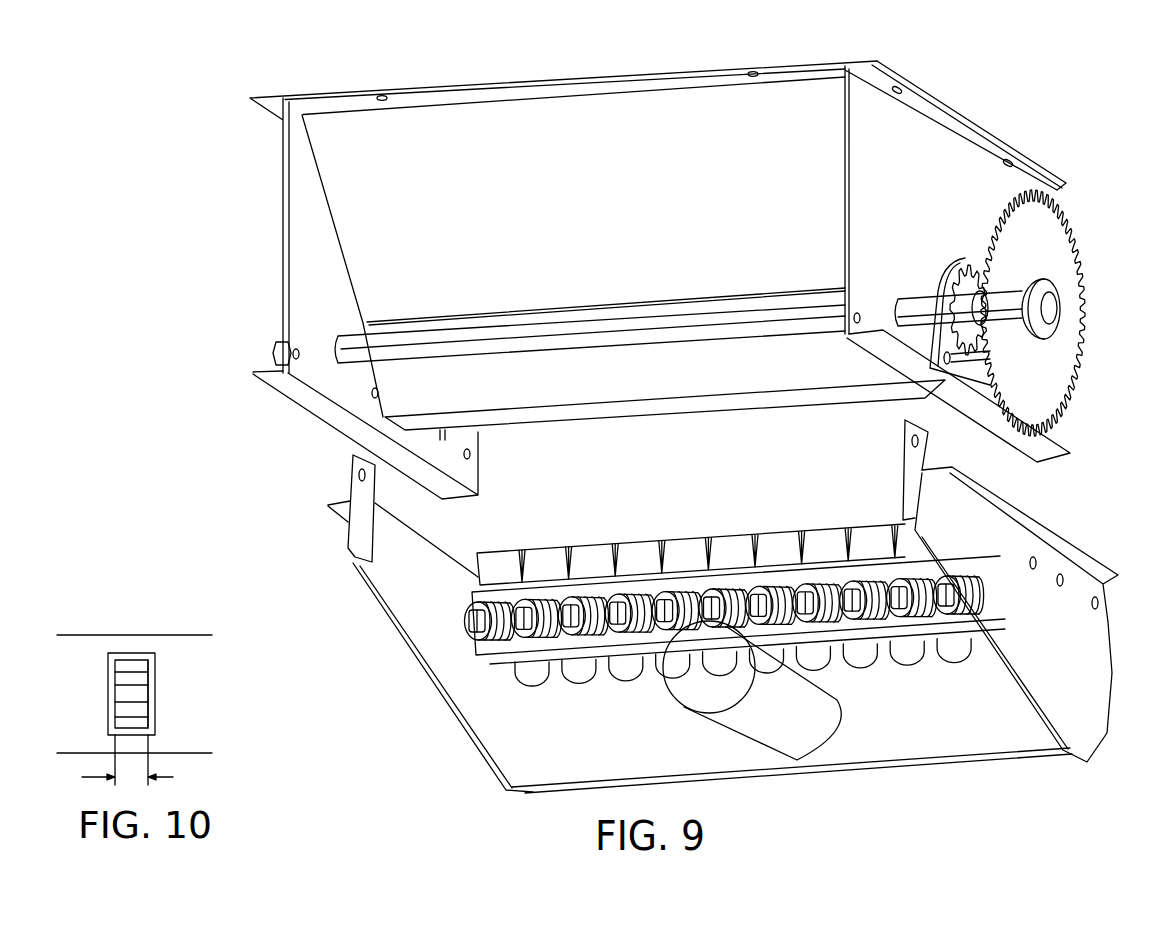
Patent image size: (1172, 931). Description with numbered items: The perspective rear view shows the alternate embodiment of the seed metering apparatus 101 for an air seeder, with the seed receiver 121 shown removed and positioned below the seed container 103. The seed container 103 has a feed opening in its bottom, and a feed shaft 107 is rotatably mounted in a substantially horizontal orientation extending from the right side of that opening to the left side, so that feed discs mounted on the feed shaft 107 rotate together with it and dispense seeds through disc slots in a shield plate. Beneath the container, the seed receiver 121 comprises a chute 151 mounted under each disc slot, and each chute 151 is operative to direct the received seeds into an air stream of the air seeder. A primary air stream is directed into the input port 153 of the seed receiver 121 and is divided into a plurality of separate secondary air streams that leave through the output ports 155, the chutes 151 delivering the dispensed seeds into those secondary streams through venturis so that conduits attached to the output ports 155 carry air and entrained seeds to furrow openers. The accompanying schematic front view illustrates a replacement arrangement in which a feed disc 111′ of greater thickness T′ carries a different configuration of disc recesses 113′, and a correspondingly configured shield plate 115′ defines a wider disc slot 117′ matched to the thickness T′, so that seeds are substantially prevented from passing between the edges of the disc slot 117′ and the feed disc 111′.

In FIG. 9, the seed metering apparatus 101 is at (257, 220).
In FIG. 9, the seed container 103 is at (950, 103).
In FIG. 9, the feed shaft 107 is at (1062, 303).
In FIG. 9, the seed receiver 121 is at (945, 762).
In FIG. 9, the chute 151 is at (484, 550).
In FIG. 9, the input port 153 is at (683, 712).
In FIG. 9, the output ports 155 is at (465, 621).
In FIG. 10, the feed disc 111′ is at (148, 695).
In FIG. 10, the disc recesses 113′ is at (128, 680).
In FIG. 10, the shield plate 115′ is at (168, 635).
In FIG. 10, the disc slot 117′ is at (155, 707).
In FIG. 10, the thickness T′ is at (134, 762).